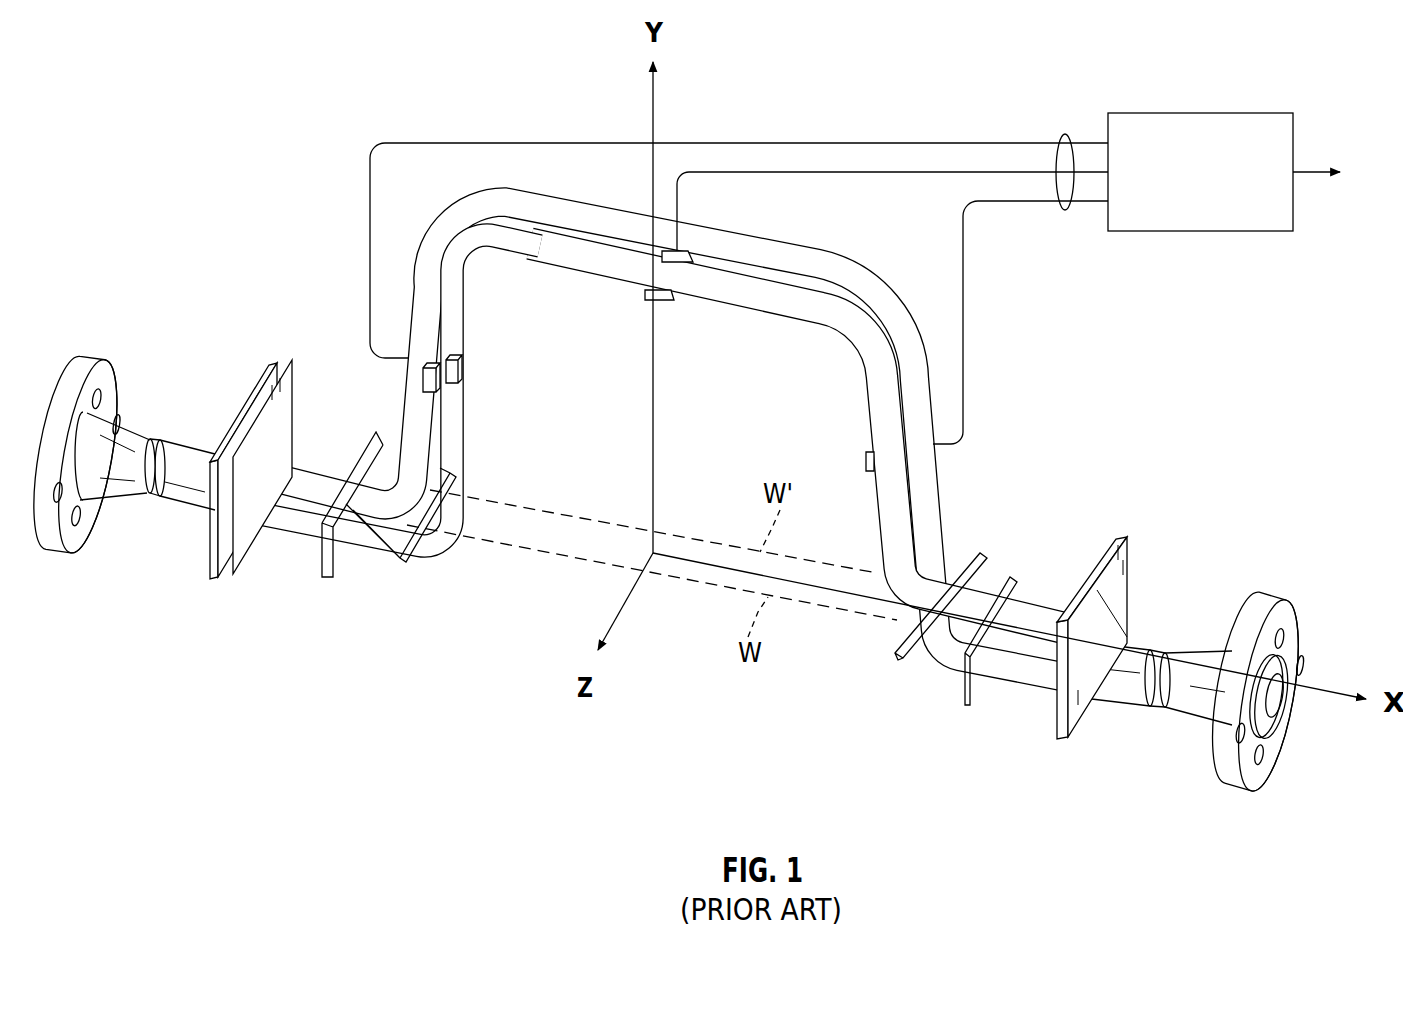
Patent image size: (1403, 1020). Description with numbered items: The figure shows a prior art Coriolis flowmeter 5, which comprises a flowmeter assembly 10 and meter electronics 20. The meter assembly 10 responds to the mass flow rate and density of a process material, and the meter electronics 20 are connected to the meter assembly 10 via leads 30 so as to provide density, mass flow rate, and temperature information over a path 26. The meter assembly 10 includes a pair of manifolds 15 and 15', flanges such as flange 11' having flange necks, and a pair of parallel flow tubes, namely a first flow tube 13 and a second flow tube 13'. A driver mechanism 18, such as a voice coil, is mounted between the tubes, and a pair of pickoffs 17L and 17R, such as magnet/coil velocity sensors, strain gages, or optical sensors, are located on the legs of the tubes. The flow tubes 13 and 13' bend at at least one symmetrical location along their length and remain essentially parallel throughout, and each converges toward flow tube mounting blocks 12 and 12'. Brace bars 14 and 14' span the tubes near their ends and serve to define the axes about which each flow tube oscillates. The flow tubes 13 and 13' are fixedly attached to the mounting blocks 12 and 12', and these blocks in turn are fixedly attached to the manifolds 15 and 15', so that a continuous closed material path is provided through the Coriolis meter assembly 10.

The flowmeter 5 is at (1080, 414).
The flowmeter assembly 10 is at (268, 230).
The flange 11' is at (668, 544).
The flow tube mounting block 12 is at (251, 444).
The flow tube mounting block 12' is at (1107, 604).
The first flow tube 13 is at (665, 434).
The second flow tube 13' is at (680, 412).
The brace bar 14 is at (400, 530).
The brace bar 14' is at (916, 643).
The manifold 15 is at (145, 506).
The manifold 15' is at (1153, 702).
The pickoff 17L is at (478, 376).
The pickoff 17R is at (858, 462).
The driver mechanism 18 is at (669, 318).
The meter electronics 20 is at (1197, 233).
The path 26 is at (1323, 164).
The leads 30 is at (1063, 215).